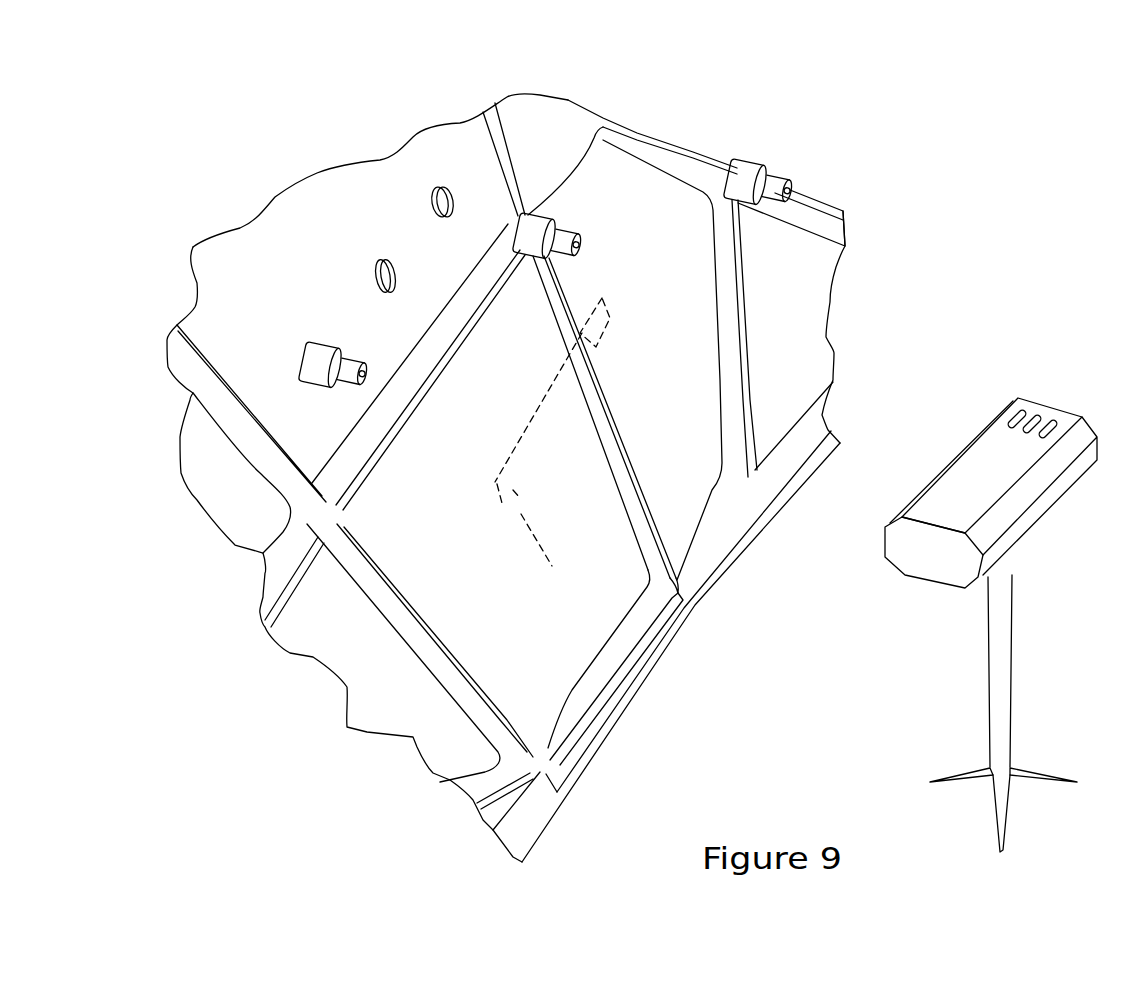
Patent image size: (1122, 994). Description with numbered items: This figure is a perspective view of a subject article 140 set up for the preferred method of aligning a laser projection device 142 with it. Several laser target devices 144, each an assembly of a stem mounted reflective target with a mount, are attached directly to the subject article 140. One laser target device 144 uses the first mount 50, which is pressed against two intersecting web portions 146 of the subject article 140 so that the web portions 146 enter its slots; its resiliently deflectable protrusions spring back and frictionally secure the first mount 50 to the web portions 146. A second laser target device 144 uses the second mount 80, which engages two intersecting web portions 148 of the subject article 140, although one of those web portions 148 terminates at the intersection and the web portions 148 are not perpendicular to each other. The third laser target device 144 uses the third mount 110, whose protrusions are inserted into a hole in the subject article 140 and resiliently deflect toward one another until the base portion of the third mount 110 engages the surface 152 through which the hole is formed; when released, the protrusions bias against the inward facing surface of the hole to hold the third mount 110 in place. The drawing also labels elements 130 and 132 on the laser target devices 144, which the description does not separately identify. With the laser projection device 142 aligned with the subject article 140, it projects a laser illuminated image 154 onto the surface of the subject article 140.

The first mount 50 is at (394, 278).
The second mount 80 is at (756, 160).
The third mount 110 is at (309, 367).
The mounting base 130 is at (489, 361).
The connector 132 is at (583, 247).
The subject article 140 is at (402, 152).
The laser projection device 142 is at (1067, 394).
The laser target devices 144 is at (489, 335).
The web portions 146 is at (540, 212).
The web portions 148 is at (716, 173).
The surface 152 is at (317, 272).
The laser illuminated image 154 is at (513, 457).